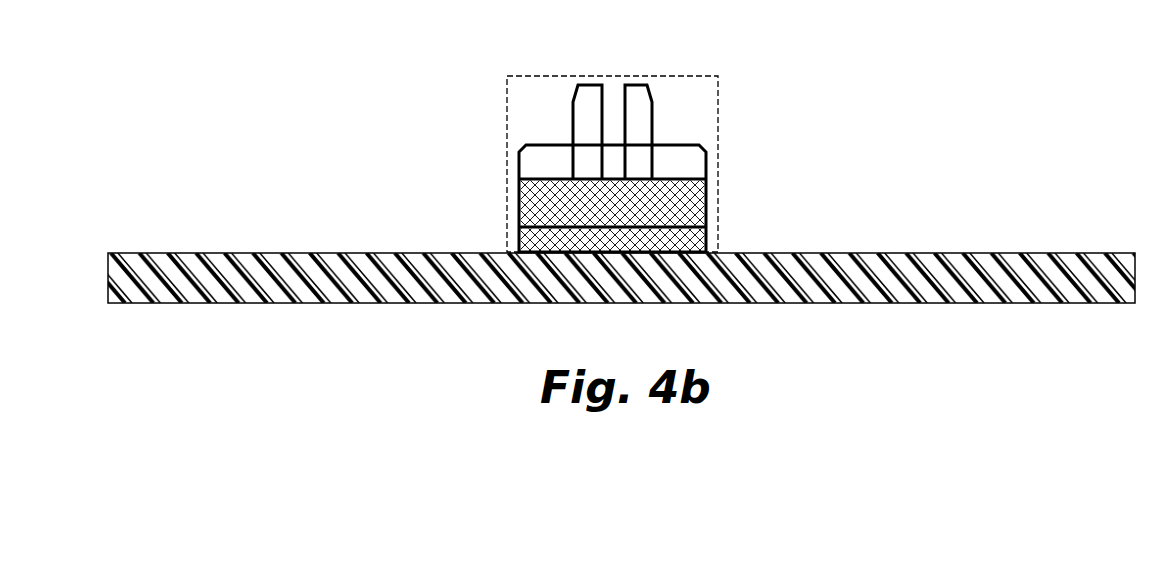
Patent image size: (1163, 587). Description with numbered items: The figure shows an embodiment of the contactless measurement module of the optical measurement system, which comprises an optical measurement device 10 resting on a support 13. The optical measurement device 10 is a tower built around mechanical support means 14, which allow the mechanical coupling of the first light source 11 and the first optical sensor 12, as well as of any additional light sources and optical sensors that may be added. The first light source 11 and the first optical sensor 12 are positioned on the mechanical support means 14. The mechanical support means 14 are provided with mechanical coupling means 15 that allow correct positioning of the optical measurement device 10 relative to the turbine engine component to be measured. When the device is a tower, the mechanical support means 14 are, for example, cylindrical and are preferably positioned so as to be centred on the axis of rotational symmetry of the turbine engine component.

The optical measurement device 10 is at (507, 110).
The first light source 11 is at (612, 198).
The first optical sensor 12 is at (587, 113).
The support 13 is at (233, 275).
The mechanical support means 14 is at (528, 196).
The mechanical coupling means 15 is at (693, 242).